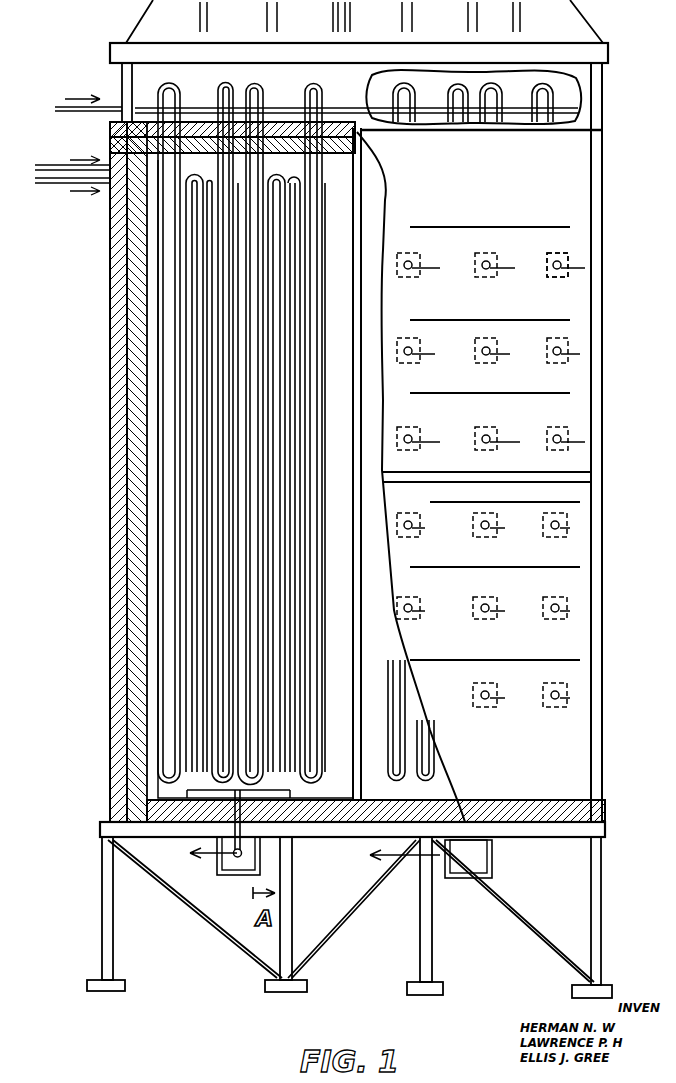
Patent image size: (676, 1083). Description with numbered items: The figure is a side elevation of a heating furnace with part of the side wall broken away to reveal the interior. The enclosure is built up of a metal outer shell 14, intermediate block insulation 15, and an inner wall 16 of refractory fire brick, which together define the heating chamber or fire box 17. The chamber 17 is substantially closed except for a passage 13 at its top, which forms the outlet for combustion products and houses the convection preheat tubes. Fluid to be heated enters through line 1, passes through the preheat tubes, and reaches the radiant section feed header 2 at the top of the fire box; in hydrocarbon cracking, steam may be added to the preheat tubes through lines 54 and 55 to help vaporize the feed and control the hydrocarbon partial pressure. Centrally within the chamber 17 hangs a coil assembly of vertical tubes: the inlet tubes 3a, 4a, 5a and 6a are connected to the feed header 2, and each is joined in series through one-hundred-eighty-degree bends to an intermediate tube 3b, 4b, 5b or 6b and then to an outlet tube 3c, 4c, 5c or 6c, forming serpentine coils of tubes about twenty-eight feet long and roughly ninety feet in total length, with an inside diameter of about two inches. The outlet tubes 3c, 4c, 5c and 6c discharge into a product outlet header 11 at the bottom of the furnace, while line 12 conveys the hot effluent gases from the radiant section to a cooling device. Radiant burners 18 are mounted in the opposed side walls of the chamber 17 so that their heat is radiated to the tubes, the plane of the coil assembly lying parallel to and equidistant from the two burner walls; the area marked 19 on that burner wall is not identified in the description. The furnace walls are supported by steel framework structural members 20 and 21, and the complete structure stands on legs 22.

The line 1 is at (75, 113).
The radiant section feed header 2 is at (193, 104).
The inlet tube 3a is at (158, 574).
The tube 3b is at (173, 597).
The outlet tube 3c is at (188, 622).
The inlet tube 4a is at (228, 698).
The tube 4b is at (213, 672).
The outlet tube 4c is at (203, 647).
The inlet tube 5a is at (253, 645).
The tube 5b is at (267, 670).
The outlet tube 5c is at (280, 697).
The inlet tube 6a is at (326, 773).
The tube 6b is at (307, 752).
The outlet tube 6c is at (293, 722).
The product outlet header 11 is at (252, 800).
The line 12 is at (224, 862).
The passage 13 is at (158, 8).
The outer shell 14 is at (110, 192).
The block insulation 15 is at (118, 234).
The inner wall 16 is at (135, 265).
The heating chamber 17 is at (155, 291).
The radiant burners 18 is at (570, 258).
The burner panel 19 is at (491, 480).
The structural member 20 is at (603, 336).
The structural member 21 is at (520, 475).
The legs 22 is at (600, 892).
The line 54 is at (55, 165).
The line 55 is at (58, 184).